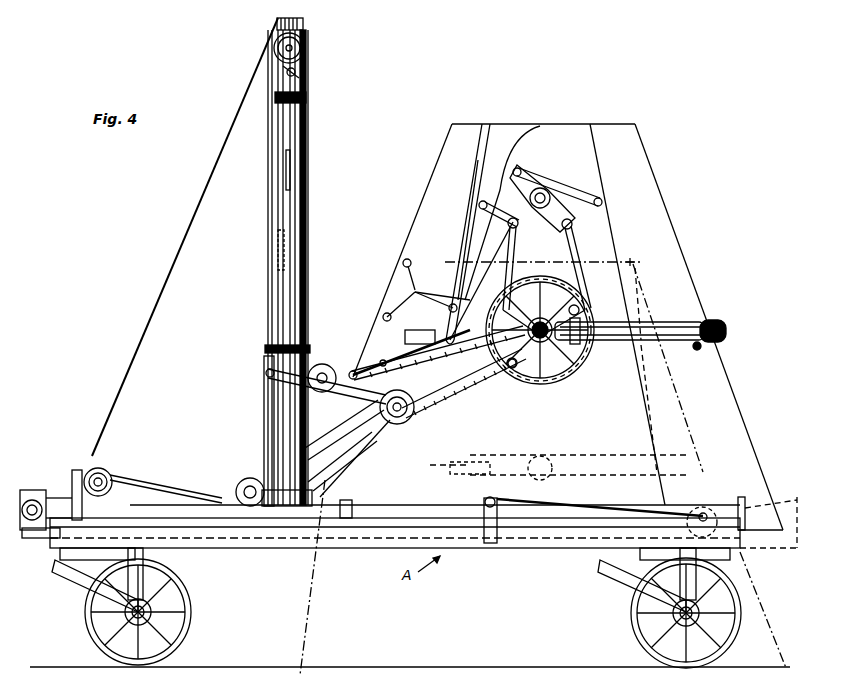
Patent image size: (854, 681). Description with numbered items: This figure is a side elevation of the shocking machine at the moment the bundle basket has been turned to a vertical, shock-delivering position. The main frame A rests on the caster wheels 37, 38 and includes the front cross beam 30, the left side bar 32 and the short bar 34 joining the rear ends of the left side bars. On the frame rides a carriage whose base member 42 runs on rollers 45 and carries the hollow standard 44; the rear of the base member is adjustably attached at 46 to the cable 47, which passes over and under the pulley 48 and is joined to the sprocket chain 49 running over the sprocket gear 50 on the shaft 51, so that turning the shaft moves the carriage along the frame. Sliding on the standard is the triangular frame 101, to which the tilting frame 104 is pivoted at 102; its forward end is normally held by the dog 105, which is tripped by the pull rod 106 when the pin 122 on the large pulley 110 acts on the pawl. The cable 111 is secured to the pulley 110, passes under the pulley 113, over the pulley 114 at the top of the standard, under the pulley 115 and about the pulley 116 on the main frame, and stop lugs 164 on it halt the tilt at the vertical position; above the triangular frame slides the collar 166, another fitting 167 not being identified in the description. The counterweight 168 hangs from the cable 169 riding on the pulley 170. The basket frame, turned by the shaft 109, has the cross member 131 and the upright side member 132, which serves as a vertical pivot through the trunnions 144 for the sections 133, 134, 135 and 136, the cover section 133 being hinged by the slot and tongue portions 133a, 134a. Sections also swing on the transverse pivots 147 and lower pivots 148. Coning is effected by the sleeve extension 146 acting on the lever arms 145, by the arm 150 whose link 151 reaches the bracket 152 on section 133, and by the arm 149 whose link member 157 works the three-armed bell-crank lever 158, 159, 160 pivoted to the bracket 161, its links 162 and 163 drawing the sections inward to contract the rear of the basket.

The front cross beam 30 is at (77, 470).
The left side bar 32 is at (300, 550).
The short bar 34 is at (762, 486).
The caster wheel 37 is at (190, 622).
The caster wheel 38 is at (725, 648).
The base member 42 is at (349, 522).
The hollow standard 44 is at (284, 305).
The rollers 45 is at (492, 548).
The adjustable connection 46 is at (475, 494).
The cable 47 is at (618, 510).
The pulley 48 is at (715, 518).
The sprocket chain 49 is at (40, 541).
The sprocket gear 50 is at (38, 492).
The shaft 51 is at (35, 485).
The triangularly shaped frame 101 is at (264, 392).
The tilting pivot 102 is at (398, 427).
The tilting frame 104 is at (495, 380).
The dog 105 is at (258, 480).
The pull cord or rod 106 is at (382, 362).
The shaft 109 is at (590, 360).
The large pulley 110 is at (566, 386).
The cable 111 is at (309, 221).
The pulley 113 is at (342, 395).
The pulley 114 is at (306, 47).
The pulley 115 is at (236, 478).
The pulley 116 is at (105, 468).
The pin 122 is at (522, 362).
The cross member 131 is at (728, 326).
The upright side member 132 is at (706, 316).
The basket section 133 is at (426, 222).
The slot and tongue portion 133a is at (487, 124).
The basket section 134 is at (508, 138).
The slot and tongue portion 134a is at (474, 214).
The basket section 135 is at (556, 140).
The basket section 136 is at (633, 124).
The trunnion 144 is at (698, 348).
The lever arm 145 is at (648, 292).
The extension 146 is at (630, 265).
The transverse pivot 147 is at (433, 307).
The pivot 148 is at (656, 409).
The arm 149 is at (475, 360).
The arm 150 is at (525, 302).
The link 151 is at (432, 282).
The bracket 152 is at (404, 270).
The link member 157 is at (520, 268).
The bell-crank lever arm 158 is at (509, 222).
The bell-crank lever arm 159 is at (578, 222).
The bell-crank lever arm 160 is at (548, 188).
The bracket 161 is at (574, 246).
The link 162 is at (520, 208).
The link 163 is at (570, 187).
The stop lug 164 is at (352, 372).
The collar 166 is at (266, 352).
The collar 167 is at (307, 99).
The weight 168 is at (312, 166).
The cable 169 is at (306, 206).
The pulley 170 is at (310, 76).